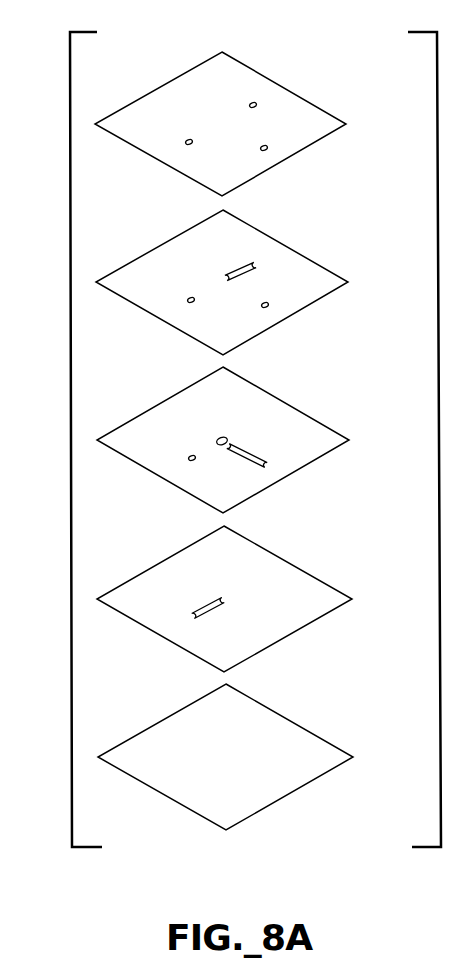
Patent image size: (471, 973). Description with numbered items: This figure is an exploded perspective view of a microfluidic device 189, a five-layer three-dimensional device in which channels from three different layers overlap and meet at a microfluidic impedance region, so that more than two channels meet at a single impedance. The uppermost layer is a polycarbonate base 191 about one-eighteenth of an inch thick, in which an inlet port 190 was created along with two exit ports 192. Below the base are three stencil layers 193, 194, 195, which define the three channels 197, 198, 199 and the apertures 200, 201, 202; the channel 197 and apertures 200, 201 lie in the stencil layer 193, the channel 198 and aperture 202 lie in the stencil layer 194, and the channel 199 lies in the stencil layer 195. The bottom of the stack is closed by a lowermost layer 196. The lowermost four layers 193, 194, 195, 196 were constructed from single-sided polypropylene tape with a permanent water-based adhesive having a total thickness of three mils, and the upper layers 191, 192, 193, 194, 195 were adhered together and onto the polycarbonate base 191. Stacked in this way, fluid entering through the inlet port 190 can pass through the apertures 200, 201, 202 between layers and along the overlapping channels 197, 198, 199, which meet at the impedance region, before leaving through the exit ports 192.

The microfluidic device 189 is at (63, 403).
The inlet port 190 is at (265, 151).
The polycarbonate base 191 is at (338, 131).
The exit ports 192 is at (256, 101).
The stencil layer 193 is at (333, 293).
The stencil layer 194 is at (328, 455).
The stencil layer 195 is at (333, 610).
The lowermost layer 196 is at (333, 770).
The channel 197 is at (231, 273).
The channel 198 is at (253, 450).
The channel 199 is at (204, 611).
The aperture 200 is at (186, 301).
The aperture 201 is at (267, 308).
The aperture 202 is at (187, 459).